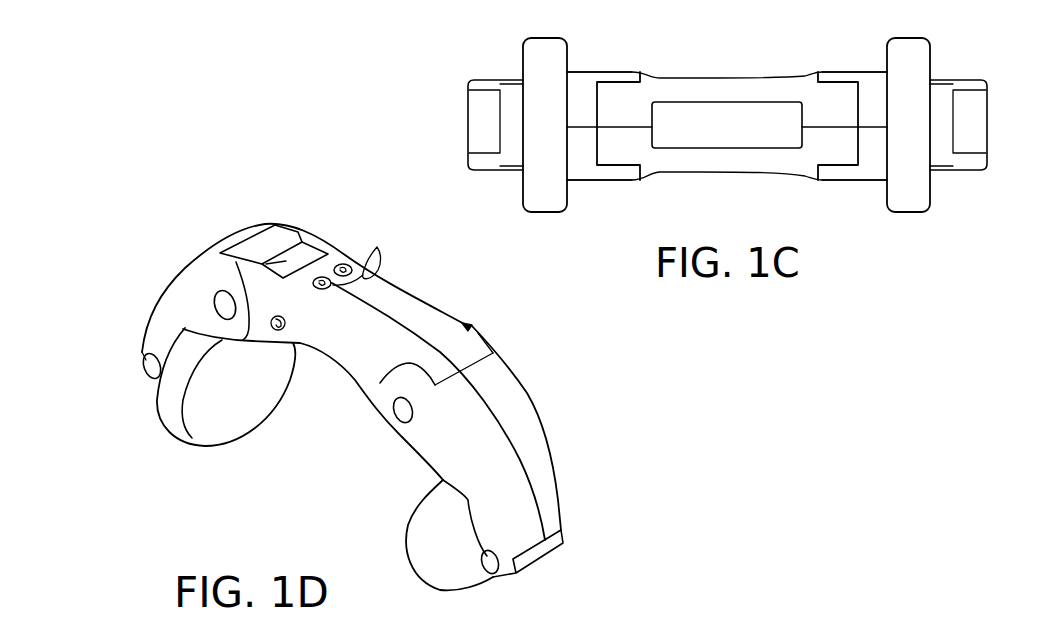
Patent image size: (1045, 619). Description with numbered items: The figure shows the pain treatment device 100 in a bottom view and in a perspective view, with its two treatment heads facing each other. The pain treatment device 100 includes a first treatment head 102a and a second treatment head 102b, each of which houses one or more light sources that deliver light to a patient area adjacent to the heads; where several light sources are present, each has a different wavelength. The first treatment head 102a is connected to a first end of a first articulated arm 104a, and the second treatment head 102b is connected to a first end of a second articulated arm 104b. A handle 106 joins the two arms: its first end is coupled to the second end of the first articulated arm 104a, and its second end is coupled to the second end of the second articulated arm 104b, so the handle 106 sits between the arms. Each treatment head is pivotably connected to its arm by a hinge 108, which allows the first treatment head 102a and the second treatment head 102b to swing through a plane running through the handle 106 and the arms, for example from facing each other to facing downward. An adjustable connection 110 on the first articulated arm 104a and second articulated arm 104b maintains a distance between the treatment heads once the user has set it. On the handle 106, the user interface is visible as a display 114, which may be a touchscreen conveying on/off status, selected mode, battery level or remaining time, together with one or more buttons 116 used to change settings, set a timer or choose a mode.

In FIG. 1C, the pain treatment device 100 is at (510, 41).
In FIG. 1D, the pain treatment device 100 is at (160, 186).
In FIG. 1C, the first treatment head 102a is at (556, 213).
In FIG. 1D, the first treatment head 102a is at (189, 447).
In FIG. 1C, the second treatment head 102b is at (913, 213).
In FIG. 1D, the second treatment head 102b is at (408, 543).
In FIG. 1C, the first articulated arm 104a is at (586, 182).
In FIG. 1D, the first articulated arm 104a is at (150, 311).
In FIG. 1C, the second articulated arm 104b is at (882, 182).
In FIG. 1D, the second articulated arm 104b is at (531, 398).
In FIG. 1C, the handle 106 is at (735, 173).
In FIG. 1D, the handle 106 is at (410, 296).
In FIG. 1C, the hinge 108 is at (482, 172).
In FIG. 1D, the hinge 108 is at (138, 374).
In FIG. 1C, the adjustable connection 110 is at (623, 182).
In FIG. 1D, the adjustable connection 110 is at (213, 302).
In FIG. 1D, the display 114 is at (226, 248).
In FIG. 1D, the buttons 116 is at (377, 247).